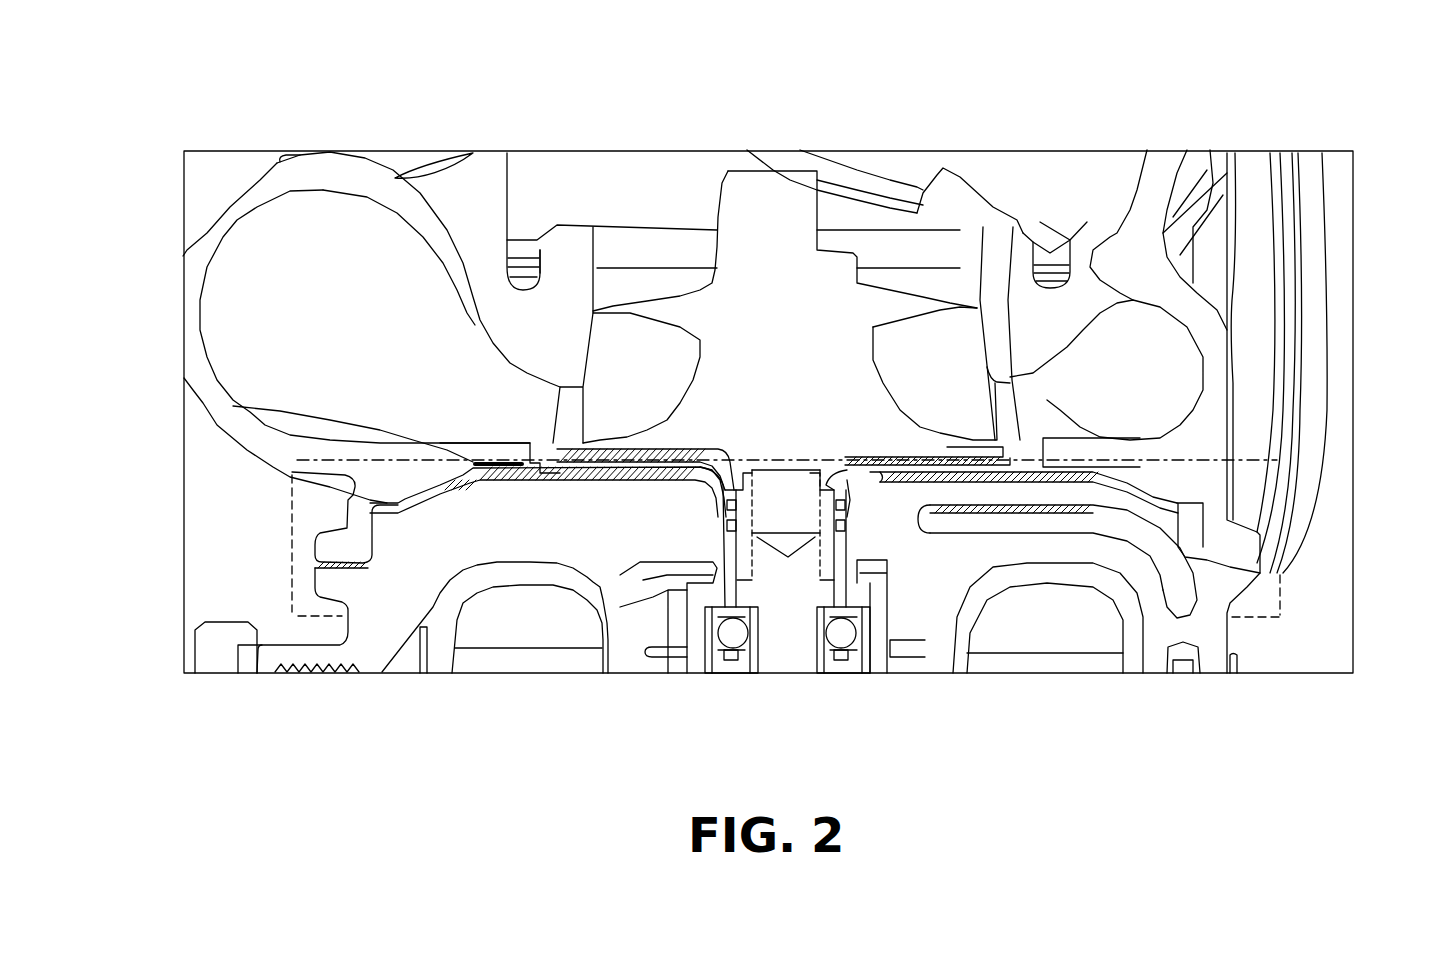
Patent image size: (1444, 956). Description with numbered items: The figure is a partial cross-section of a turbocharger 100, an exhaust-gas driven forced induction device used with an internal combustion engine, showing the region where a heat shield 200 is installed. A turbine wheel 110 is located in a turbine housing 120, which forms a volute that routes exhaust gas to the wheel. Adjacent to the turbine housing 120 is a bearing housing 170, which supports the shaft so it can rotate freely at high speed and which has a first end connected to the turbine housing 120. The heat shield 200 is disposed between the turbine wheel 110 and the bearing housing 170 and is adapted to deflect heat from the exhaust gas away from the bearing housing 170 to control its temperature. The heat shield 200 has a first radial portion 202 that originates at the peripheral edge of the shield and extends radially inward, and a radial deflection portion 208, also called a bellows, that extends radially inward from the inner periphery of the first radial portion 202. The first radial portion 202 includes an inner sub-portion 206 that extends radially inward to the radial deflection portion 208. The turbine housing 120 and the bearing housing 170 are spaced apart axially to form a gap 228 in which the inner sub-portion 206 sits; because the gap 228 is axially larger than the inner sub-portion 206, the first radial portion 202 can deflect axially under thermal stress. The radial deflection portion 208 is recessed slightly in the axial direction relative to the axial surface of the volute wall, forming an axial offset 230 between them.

The turbocharger 100 is at (224, 106).
The turbine wheel 110 is at (977, 440).
The turbine housing 120 is at (290, 435).
The bearing housing 170 is at (440, 540).
The heat shield 200 is at (1087, 467).
The first radial portion 202 is at (292, 472).
The inner sub-portion 206 is at (455, 482).
The radial deflection portion 208 is at (567, 447).
The gap 228 is at (233, 406).
The axial offset 230 is at (557, 387).